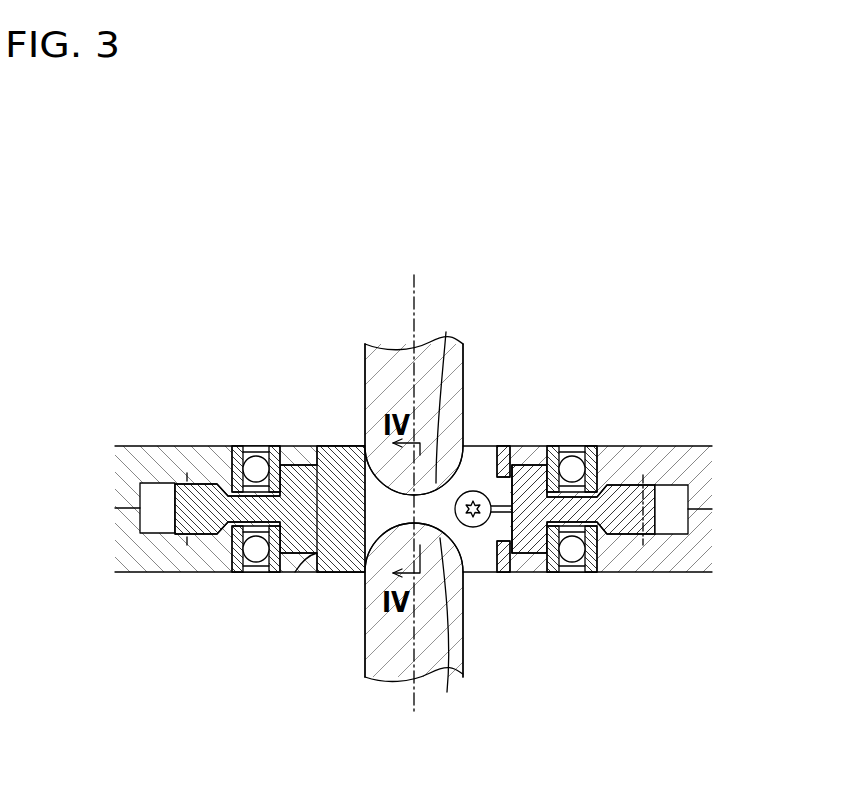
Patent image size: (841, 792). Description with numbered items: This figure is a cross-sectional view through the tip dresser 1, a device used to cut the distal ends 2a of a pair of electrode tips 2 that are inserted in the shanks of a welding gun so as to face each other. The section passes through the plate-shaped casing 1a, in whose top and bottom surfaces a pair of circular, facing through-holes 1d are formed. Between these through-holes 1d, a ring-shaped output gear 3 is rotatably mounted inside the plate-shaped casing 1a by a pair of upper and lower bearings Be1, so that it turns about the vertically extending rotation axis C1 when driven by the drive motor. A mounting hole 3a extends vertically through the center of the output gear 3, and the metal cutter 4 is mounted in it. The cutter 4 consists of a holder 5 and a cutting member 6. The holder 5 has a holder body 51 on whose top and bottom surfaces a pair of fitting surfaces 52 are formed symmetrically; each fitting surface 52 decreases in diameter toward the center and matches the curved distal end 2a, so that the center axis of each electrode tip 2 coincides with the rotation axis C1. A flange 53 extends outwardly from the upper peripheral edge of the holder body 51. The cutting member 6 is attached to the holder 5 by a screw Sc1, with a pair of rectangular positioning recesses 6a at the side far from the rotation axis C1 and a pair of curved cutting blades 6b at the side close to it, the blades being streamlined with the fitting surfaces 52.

The tip dresser 1 is at (692, 282).
The plate-shaped casing 1a is at (700, 446).
The through-holes 1d is at (238, 446).
The electrode tips 2 is at (466, 362).
The distal end 2a is at (442, 492).
The output gear 3 is at (631, 537).
The mounting hole 3a is at (513, 548).
The cutter 4 is at (340, 418).
The holder 5 is at (317, 443).
The holder body 51 is at (297, 572).
The fitting surfaces 52 is at (365, 427).
The flange 53 is at (295, 446).
The cutting member 6 is at (473, 442).
The positioning recesses 6a is at (502, 465).
The cutting blades 6b is at (445, 510).
The bearings Be1 is at (592, 446).
The screw Sc1 is at (488, 527).
The rotation axis C1 is at (415, 275).